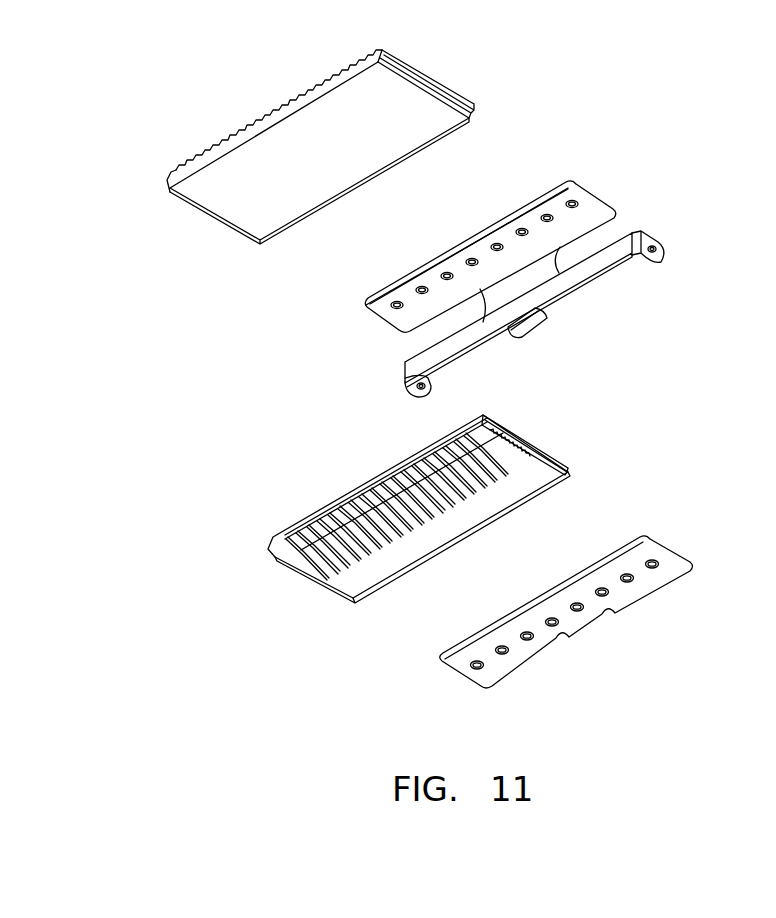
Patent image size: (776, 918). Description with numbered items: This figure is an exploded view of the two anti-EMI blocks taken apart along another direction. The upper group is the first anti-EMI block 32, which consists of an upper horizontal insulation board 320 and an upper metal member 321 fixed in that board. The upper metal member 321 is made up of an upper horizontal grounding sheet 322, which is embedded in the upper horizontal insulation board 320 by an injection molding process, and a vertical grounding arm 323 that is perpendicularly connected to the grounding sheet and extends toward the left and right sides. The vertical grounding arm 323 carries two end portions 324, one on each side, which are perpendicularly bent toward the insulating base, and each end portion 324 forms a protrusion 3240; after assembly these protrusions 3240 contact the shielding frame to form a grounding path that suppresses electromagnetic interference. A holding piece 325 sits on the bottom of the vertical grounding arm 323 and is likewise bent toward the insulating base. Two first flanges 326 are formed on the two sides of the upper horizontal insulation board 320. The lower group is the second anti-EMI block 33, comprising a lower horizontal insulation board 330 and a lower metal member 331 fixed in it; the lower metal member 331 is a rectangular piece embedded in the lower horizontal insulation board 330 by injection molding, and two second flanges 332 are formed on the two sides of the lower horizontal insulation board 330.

The first anti-EMI block 32 is at (463, 44).
The upper horizontal insulation board 320 is at (172, 166).
The upper metal member 321 is at (440, 256).
The upper horizontal grounding sheet 322 is at (503, 230).
The vertical grounding arm 323 is at (435, 356).
The end portion 324 is at (648, 241).
The protrusion 3240 is at (663, 247).
The holding piece 325 is at (533, 325).
The first flange 326 is at (447, 92).
The second anti-EMI block 33 is at (462, 716).
The lower horizontal insulation board 330 is at (272, 550).
The lower metal member 331 is at (672, 571).
The second flange 332 is at (548, 452).